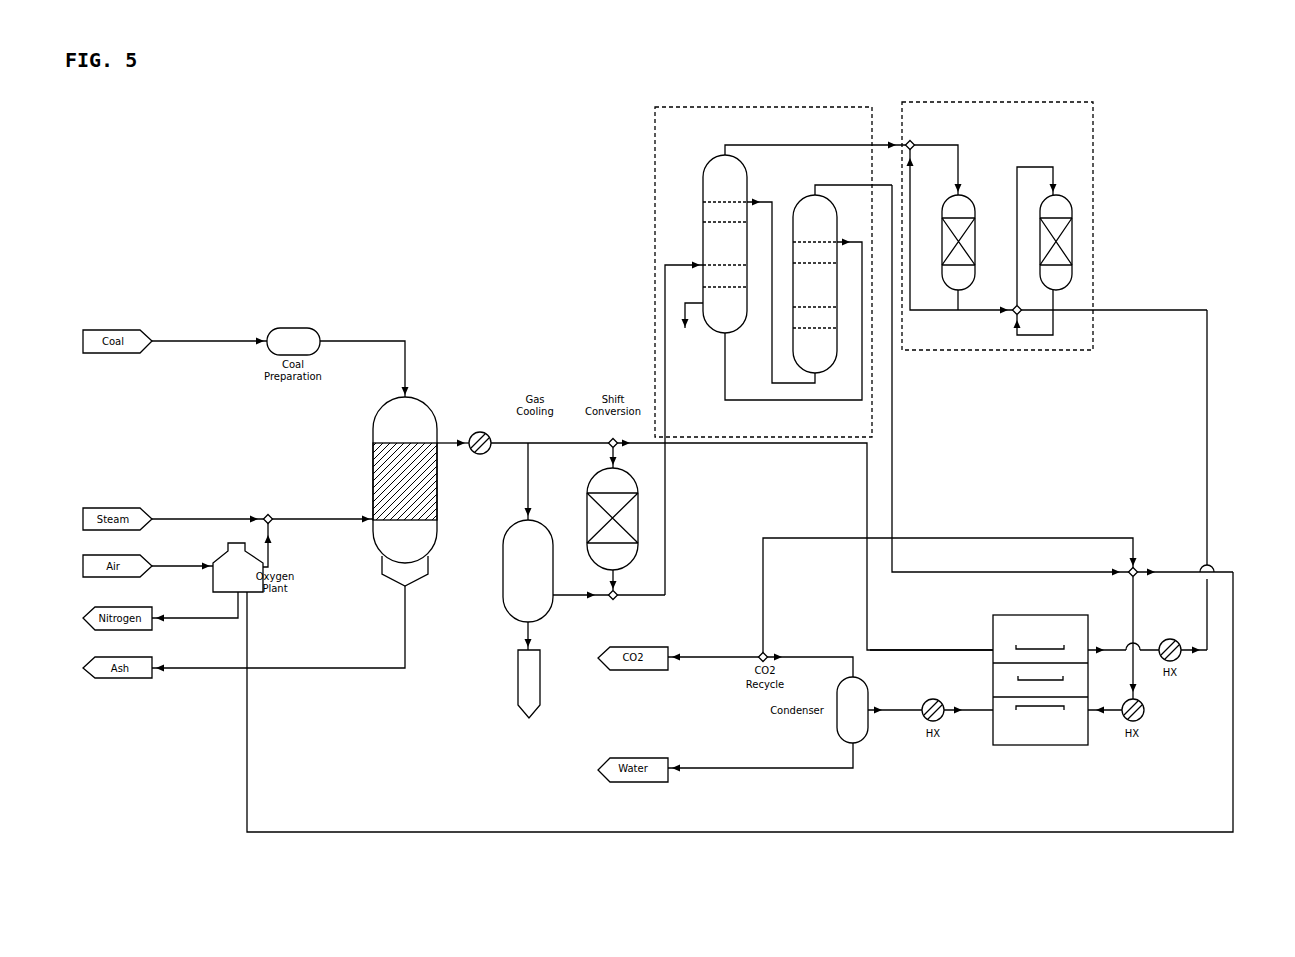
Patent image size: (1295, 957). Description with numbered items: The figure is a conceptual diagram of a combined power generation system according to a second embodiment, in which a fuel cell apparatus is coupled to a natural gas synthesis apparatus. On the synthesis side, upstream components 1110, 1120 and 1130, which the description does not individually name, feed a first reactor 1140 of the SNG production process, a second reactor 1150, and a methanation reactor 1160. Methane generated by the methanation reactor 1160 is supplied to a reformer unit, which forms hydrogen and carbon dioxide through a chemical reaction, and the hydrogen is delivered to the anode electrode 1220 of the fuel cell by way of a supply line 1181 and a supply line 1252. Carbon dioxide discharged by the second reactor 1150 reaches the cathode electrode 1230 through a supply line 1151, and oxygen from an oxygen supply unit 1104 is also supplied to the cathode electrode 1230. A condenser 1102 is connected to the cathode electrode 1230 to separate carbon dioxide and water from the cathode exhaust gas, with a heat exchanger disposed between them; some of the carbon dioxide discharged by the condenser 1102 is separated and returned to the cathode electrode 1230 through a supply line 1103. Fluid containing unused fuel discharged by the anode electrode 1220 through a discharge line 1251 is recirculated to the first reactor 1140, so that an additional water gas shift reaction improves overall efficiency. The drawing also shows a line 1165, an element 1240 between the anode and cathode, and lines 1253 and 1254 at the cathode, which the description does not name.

The condenser 1102 is at (838, 745).
The supply line 1103 is at (1053, 538).
The oxygen supply unit 1104 is at (255, 594).
The gasifier 1110 is at (416, 397).
The heat exchanger 1120 is at (472, 433).
The gas cooling unit 1130 is at (545, 520).
The first reactor 1140 is at (638, 520).
The second reactor 1150 is at (655, 258).
The supply line 1151 is at (892, 457).
The methanation reactor 1160 is at (1093, 258).
The recycle line 1165 is at (443, 832).
The supply line 1181 is at (1207, 457).
The anode electrode 1220 is at (993, 657).
The cathode electrode 1230 is at (998, 742).
The electrolyte 1240 is at (1005, 685).
The discharge line 1251 is at (955, 646).
The supply line 1252 is at (1136, 653).
The cathode outlet line 1253 is at (980, 712).
The cathode inlet line 1254 is at (1108, 712).